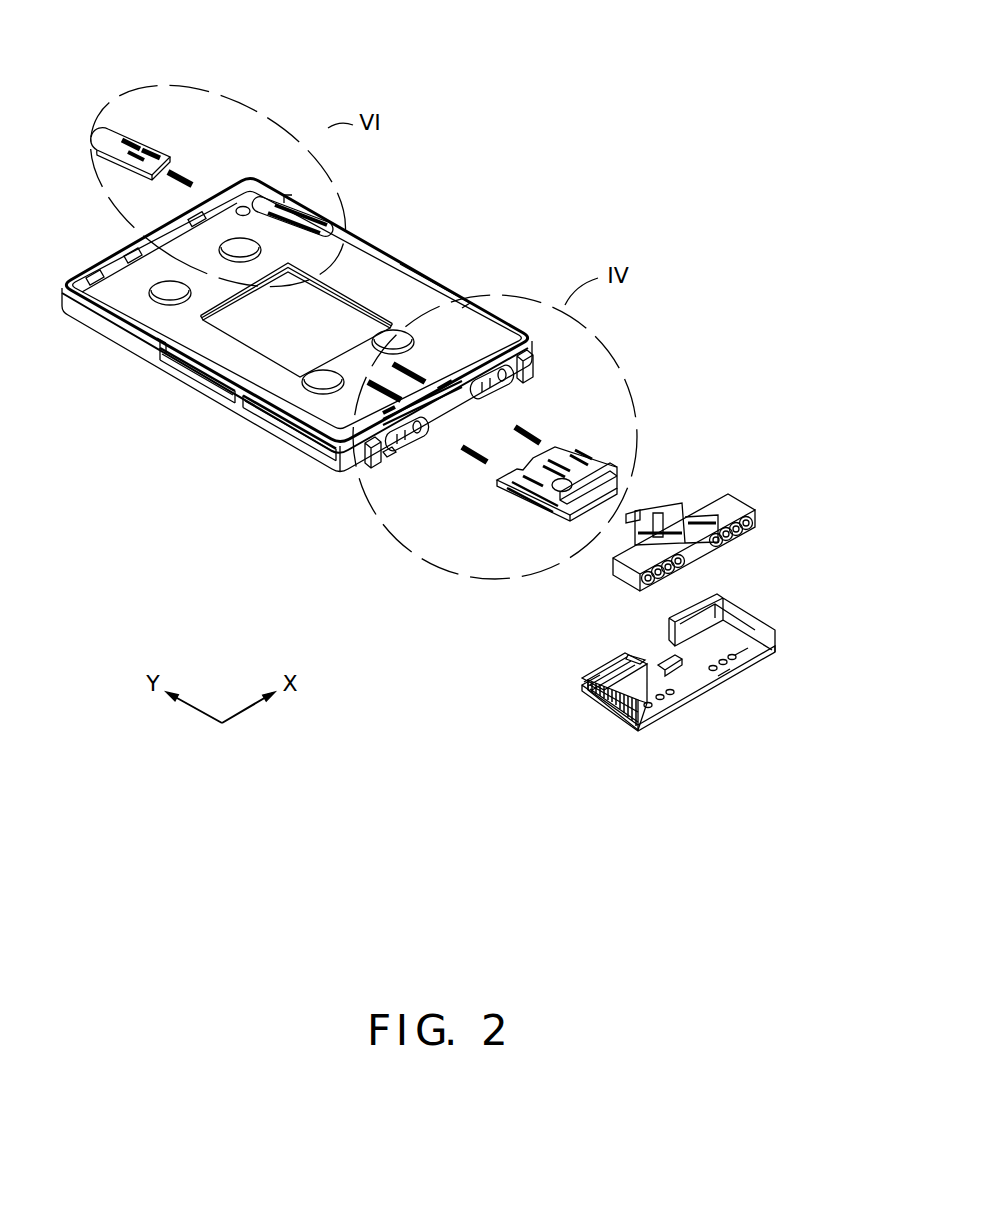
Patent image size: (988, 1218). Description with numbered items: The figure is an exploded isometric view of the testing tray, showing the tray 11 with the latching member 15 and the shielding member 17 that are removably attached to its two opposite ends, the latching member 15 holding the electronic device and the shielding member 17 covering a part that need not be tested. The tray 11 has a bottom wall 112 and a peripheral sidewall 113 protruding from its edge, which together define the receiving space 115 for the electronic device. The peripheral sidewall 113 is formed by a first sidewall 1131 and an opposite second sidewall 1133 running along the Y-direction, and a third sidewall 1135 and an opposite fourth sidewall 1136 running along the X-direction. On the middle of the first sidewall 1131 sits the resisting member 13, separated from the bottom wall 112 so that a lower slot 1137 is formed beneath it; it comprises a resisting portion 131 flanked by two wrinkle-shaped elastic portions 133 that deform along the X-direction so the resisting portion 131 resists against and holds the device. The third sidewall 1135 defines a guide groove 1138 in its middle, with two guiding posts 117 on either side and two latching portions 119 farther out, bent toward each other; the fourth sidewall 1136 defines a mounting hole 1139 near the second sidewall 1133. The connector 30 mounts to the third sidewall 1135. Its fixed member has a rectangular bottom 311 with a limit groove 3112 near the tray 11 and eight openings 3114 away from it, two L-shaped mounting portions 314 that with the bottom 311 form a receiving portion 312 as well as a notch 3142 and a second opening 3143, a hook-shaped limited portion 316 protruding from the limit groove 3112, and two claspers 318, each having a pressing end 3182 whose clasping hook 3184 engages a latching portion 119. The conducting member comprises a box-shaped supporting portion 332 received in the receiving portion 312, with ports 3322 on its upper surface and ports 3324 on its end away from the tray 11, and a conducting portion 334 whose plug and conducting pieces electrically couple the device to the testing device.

The tray 11 is at (318, 315).
The resisting member 13 is at (216, 404).
The latching member 15 is at (515, 508).
The shielding member 17 is at (179, 136).
The connector 30 is at (629, 625).
The bottom wall 112 is at (350, 272).
The peripheral sidewall 113 is at (319, 161).
The receiving space 115 is at (397, 333).
The guiding posts 117 is at (515, 385).
The latching portions 119 is at (527, 372).
The resisting portion 131 is at (197, 378).
The elastic portions 133 is at (246, 428).
The bottom 311 is at (661, 705).
The receiving portion 312 is at (725, 620).
The mounting portions 314 is at (602, 708).
The limited portion 316 is at (665, 658).
The claspers 318 is at (533, 704).
The supporting portion 332 is at (713, 506).
The conducting portion 334 is at (645, 505).
The first sidewall 1131 is at (297, 436).
The second sidewall 1133 is at (427, 303).
The third sidewall 1135 is at (388, 458).
The fourth sidewall 1136 is at (132, 243).
The lower slot 1137 is at (170, 366).
The guide groove 1138 is at (428, 406).
The mounting hole 1139 is at (228, 192).
The limit groove 3112 is at (690, 666).
The openings 3114 is at (740, 660).
The notch 3142 is at (648, 652).
The second opening 3143 is at (724, 673).
The pressing end 3182 is at (570, 716).
The clasping hook 3184 is at (587, 690).
The ports 3322 is at (722, 505).
The ports 3324 is at (757, 515).